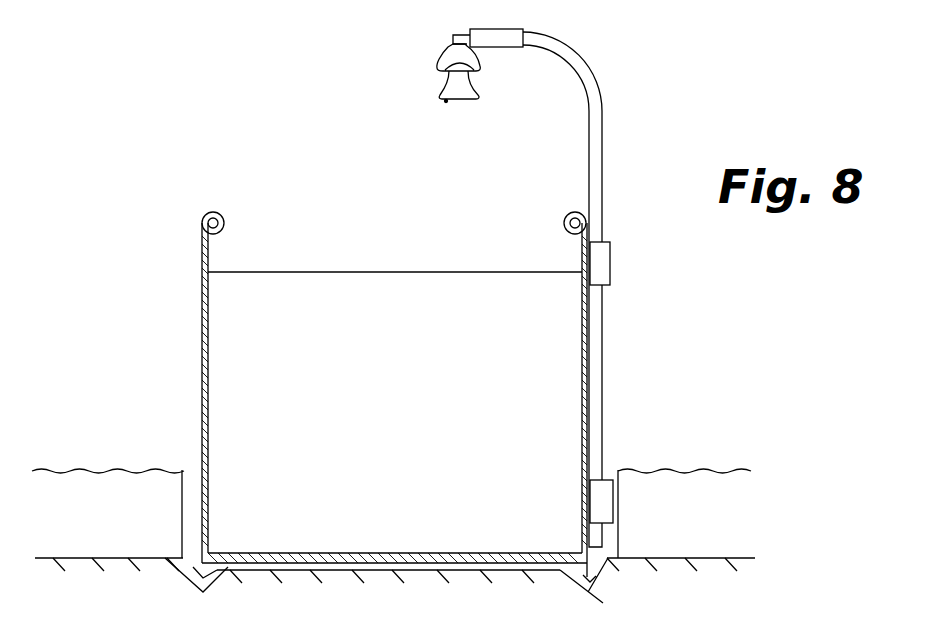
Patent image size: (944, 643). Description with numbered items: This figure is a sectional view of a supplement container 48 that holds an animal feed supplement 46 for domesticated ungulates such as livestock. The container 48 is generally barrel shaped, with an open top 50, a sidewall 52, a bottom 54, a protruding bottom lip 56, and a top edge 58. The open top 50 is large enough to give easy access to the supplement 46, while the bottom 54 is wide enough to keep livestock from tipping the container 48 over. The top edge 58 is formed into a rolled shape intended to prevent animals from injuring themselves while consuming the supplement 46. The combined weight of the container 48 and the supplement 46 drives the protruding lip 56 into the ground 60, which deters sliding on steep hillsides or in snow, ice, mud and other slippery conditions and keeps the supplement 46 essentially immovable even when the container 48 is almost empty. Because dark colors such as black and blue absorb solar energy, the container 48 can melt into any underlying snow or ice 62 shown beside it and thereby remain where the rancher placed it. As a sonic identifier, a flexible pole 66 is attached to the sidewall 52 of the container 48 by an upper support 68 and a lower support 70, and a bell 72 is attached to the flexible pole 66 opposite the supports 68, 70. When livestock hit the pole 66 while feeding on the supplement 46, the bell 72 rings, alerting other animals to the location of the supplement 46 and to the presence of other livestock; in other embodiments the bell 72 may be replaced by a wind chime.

The animal feed supplement 46 is at (395, 349).
The container 48 is at (393, 335).
The open top 50 is at (370, 235).
The sidewall 52 is at (201, 345).
The bottom 54 is at (393, 553).
The protruding bottom lip 56 is at (196, 570).
The top edge 58 is at (204, 217).
The ground 60 is at (395, 585).
The snow or ice 62 is at (391, 513).
The flexible pole 66 is at (597, 78).
The upper support 68 is at (610, 258).
The lower support 70 is at (614, 497).
The bell 72 is at (438, 60).